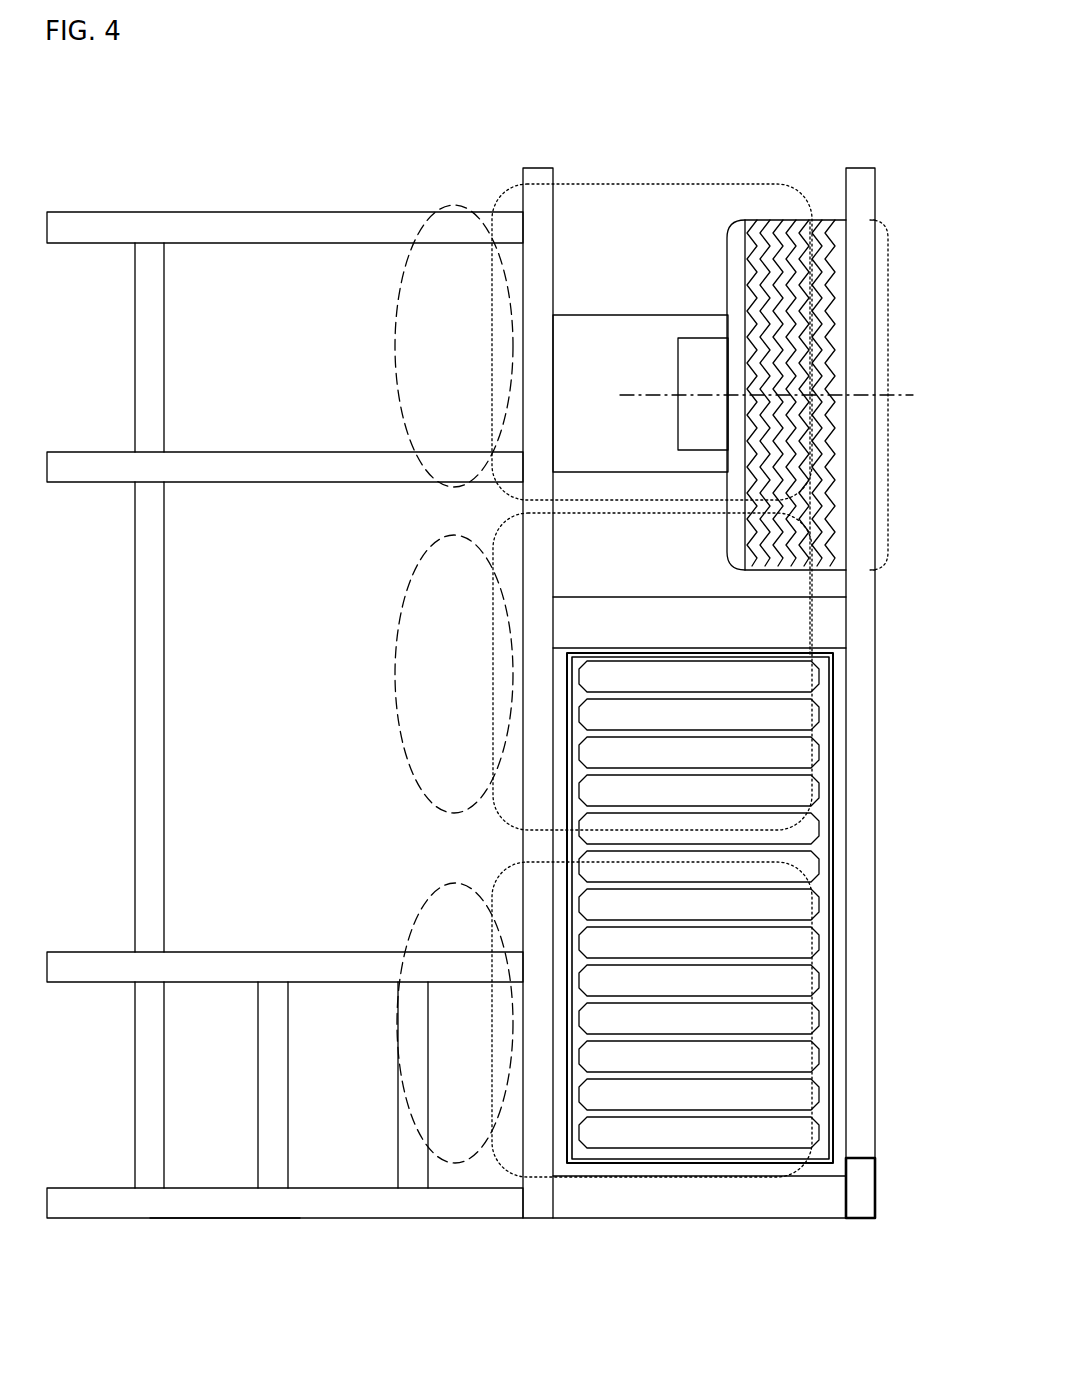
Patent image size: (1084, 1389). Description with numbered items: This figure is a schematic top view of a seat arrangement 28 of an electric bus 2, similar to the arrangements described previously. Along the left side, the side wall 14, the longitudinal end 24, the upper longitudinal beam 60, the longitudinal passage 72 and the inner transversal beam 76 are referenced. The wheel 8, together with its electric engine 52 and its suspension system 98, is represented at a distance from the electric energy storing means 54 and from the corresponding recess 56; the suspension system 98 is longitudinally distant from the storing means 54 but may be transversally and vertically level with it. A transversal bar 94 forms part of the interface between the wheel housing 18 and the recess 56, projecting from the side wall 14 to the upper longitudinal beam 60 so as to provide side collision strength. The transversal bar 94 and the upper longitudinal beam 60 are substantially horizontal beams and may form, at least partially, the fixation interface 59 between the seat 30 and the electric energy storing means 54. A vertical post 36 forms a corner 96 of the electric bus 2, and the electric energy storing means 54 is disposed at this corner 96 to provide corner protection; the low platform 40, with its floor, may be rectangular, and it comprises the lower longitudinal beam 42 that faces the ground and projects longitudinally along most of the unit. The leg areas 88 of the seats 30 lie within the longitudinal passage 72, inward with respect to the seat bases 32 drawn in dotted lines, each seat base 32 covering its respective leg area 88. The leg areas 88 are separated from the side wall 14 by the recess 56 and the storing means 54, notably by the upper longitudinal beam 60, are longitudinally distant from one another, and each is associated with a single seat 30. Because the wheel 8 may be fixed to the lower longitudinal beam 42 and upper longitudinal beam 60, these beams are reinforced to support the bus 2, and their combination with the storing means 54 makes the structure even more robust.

The electric bus 2 is at (133, 133).
The wheel 8 is at (815, 525).
The side wall 14 is at (866, 675).
The wheel housing 18 is at (809, 222).
The longitudinal end 24 is at (375, 1212).
The seat arrangement 28 is at (214, 603).
The seat 30 is at (644, 168).
The seat base 32 is at (606, 293).
The vertical post 36 is at (862, 1188).
The low platform 40 is at (214, 825).
The lower longitudinal beam 42 is at (535, 1226).
The electric engine 52 is at (691, 380).
The electric energy storing means 54 is at (834, 960).
The recess 56 is at (838, 857).
The fixation interface 59 is at (550, 620).
The upper longitudinal beam 60 is at (519, 711).
The longitudinal passage 72 is at (76, 718).
The inner transversal beam 76 is at (218, 1212).
The leg area 88 is at (444, 362).
The transversal bar 94 is at (686, 640).
The corner 96 is at (877, 1220).
The suspension system 98 is at (606, 440).